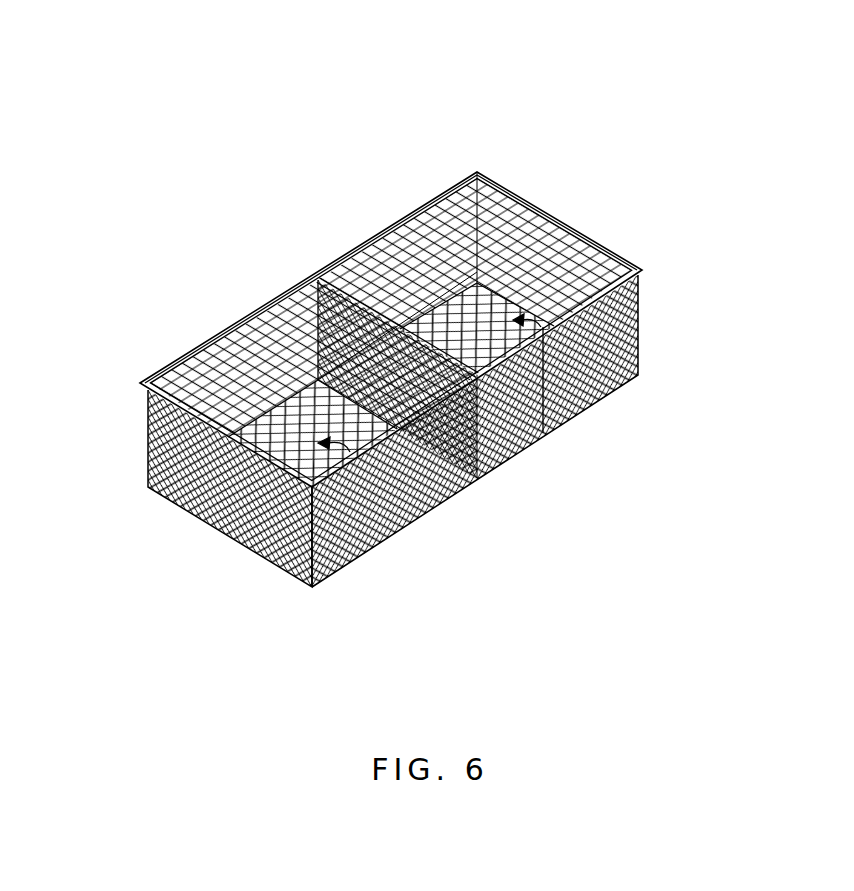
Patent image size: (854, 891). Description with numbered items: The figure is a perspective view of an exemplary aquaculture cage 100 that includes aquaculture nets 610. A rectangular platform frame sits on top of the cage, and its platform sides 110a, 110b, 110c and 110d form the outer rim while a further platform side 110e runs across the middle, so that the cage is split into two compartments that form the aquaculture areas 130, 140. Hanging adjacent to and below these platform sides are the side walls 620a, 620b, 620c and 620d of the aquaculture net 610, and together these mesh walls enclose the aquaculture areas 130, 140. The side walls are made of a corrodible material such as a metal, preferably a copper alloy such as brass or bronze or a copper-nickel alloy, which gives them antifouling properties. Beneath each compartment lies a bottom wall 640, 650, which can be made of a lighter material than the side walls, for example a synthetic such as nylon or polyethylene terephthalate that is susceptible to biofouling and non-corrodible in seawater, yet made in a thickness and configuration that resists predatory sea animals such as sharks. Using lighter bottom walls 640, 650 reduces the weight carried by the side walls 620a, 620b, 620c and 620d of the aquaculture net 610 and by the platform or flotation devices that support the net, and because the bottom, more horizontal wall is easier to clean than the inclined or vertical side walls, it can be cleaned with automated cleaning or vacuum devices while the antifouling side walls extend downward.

The aquaculture cage 100 is at (385, 85).
The platform side 110a is at (386, 266).
The platform side 110b is at (152, 412).
The platform side 110c is at (603, 300).
The platform side 110d is at (512, 185).
The platform side 110e is at (370, 310).
The aquaculture area 130 is at (245, 402).
The aquaculture area 140 is at (463, 320).
The aquaculture net 610 is at (467, 325).
The side wall 620a is at (247, 347).
The side wall 620b is at (232, 540).
The side wall 620c is at (453, 500).
The side wall 620d is at (553, 255).
The bottom wall 640 is at (357, 465).
The bottom wall 650 is at (536, 328).